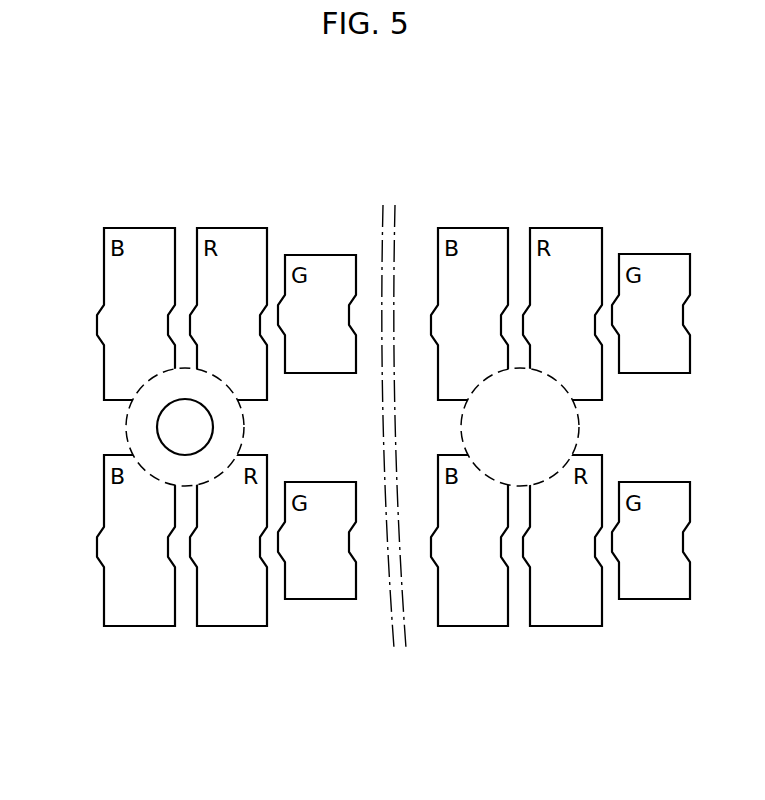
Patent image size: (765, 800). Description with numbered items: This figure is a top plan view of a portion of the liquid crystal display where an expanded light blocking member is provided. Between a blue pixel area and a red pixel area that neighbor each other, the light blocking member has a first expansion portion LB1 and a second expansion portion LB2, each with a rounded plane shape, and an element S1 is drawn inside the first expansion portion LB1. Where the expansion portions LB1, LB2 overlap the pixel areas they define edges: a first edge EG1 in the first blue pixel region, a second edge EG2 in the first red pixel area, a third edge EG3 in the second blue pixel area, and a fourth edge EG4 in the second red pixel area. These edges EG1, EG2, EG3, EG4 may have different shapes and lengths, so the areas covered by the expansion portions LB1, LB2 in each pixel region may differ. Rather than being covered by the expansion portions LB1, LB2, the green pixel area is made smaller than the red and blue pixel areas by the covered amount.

The first edge EG1 is at (148, 383).
The second edge EG2 is at (213, 377).
The third edge EG3 is at (135, 478).
The fourth edge EG4 is at (208, 478).
The first expansion portion LB1 is at (127, 420).
The second expansion portion LB2 is at (548, 480).
The spacer S1 is at (185, 427).